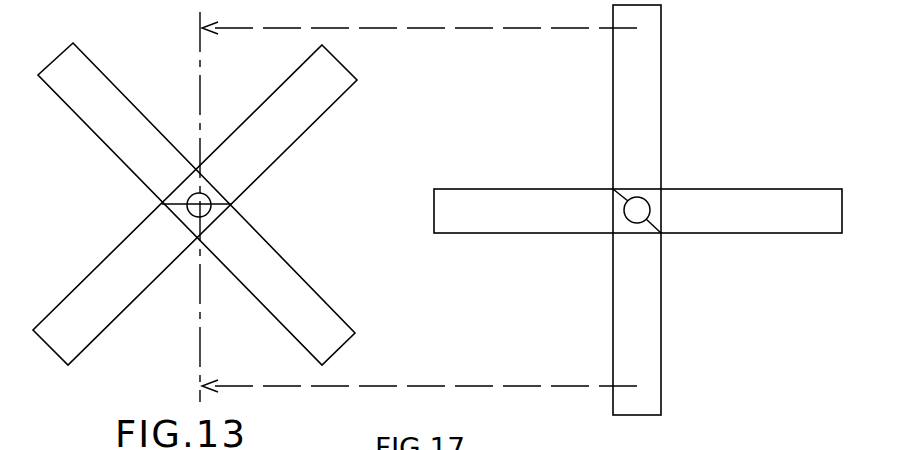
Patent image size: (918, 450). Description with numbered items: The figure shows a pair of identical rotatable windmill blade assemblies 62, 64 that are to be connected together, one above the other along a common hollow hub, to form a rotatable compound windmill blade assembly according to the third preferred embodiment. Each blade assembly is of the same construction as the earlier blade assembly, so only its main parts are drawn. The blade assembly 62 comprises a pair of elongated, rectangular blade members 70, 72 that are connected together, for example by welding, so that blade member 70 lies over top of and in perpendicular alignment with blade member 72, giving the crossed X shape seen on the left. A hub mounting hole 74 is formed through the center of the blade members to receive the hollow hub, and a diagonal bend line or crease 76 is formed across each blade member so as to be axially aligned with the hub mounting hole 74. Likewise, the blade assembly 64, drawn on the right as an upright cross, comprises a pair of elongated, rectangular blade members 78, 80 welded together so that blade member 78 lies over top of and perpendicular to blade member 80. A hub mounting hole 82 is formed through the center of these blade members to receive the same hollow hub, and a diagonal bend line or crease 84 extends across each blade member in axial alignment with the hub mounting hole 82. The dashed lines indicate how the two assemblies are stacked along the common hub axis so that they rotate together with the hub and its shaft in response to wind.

The blade assembly 62 is at (195, 182).
The blade assembly 64 is at (638, 207).
The blade member 70 is at (270, 118).
The blade member 72 is at (78, 97).
The hub mounting hole 74 is at (199, 218).
The diagonal bend line or crease 76 is at (213, 203).
The blade member 78 is at (785, 200).
The blade member 80 is at (630, 72).
The hub mounting hole 82 is at (648, 198).
The diagonal bend line or crease 84 is at (625, 219).